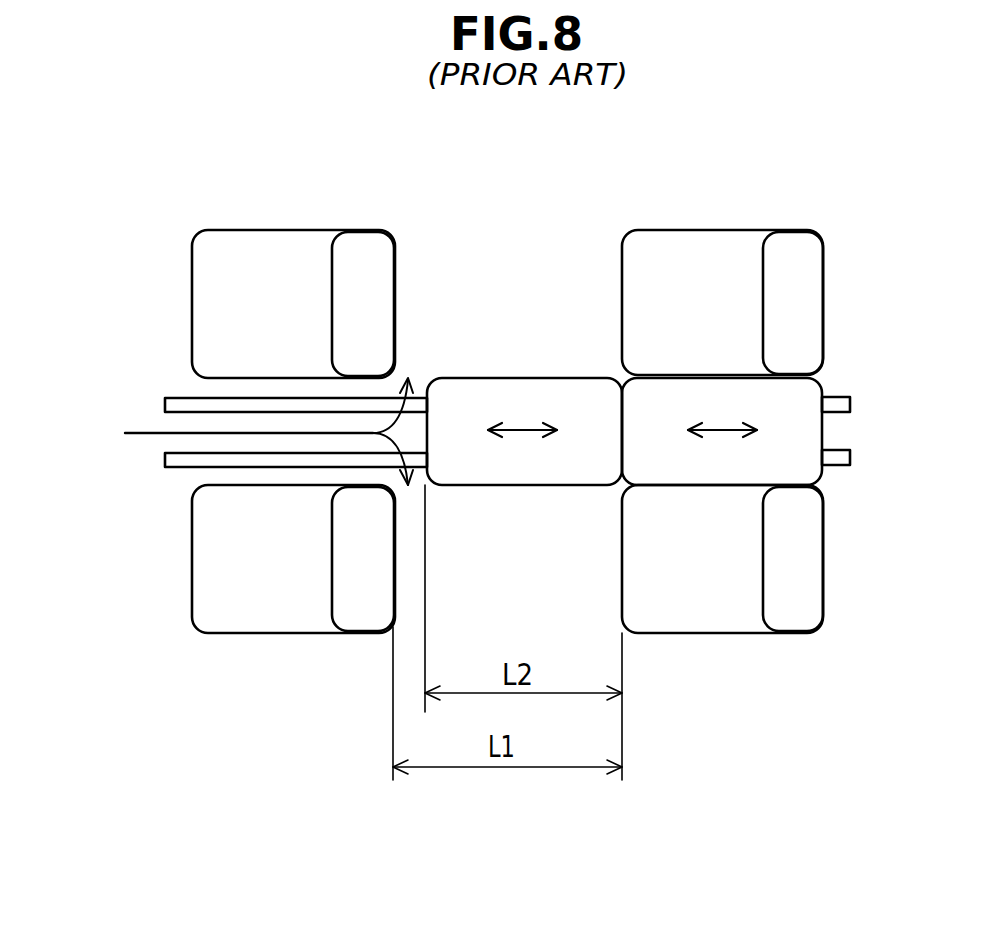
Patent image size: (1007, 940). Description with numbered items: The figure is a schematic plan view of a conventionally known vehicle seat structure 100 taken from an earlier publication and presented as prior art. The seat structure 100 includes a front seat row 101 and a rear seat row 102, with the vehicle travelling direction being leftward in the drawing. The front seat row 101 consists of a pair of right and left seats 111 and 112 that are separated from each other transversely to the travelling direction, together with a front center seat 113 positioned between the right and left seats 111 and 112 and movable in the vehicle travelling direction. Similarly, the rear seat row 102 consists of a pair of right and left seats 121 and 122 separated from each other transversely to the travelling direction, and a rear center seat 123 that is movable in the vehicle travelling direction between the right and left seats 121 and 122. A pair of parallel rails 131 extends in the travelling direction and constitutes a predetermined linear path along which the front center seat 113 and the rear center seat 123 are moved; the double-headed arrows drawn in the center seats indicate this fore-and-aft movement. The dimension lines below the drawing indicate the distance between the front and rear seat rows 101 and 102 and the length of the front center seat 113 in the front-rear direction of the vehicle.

The seat structure 100 is at (148, 180).
The front seat row 101 is at (305, 205).
The rear seat row 102 is at (720, 205).
The right seat 111 is at (192, 283).
The left seat 112 is at (192, 590).
The front center seat 113 is at (497, 378).
The right seat 121 is at (622, 250).
The left seat 122 is at (708, 633).
The rear center seat 123 is at (810, 390).
The pair of parallel rails 131 is at (187, 398).